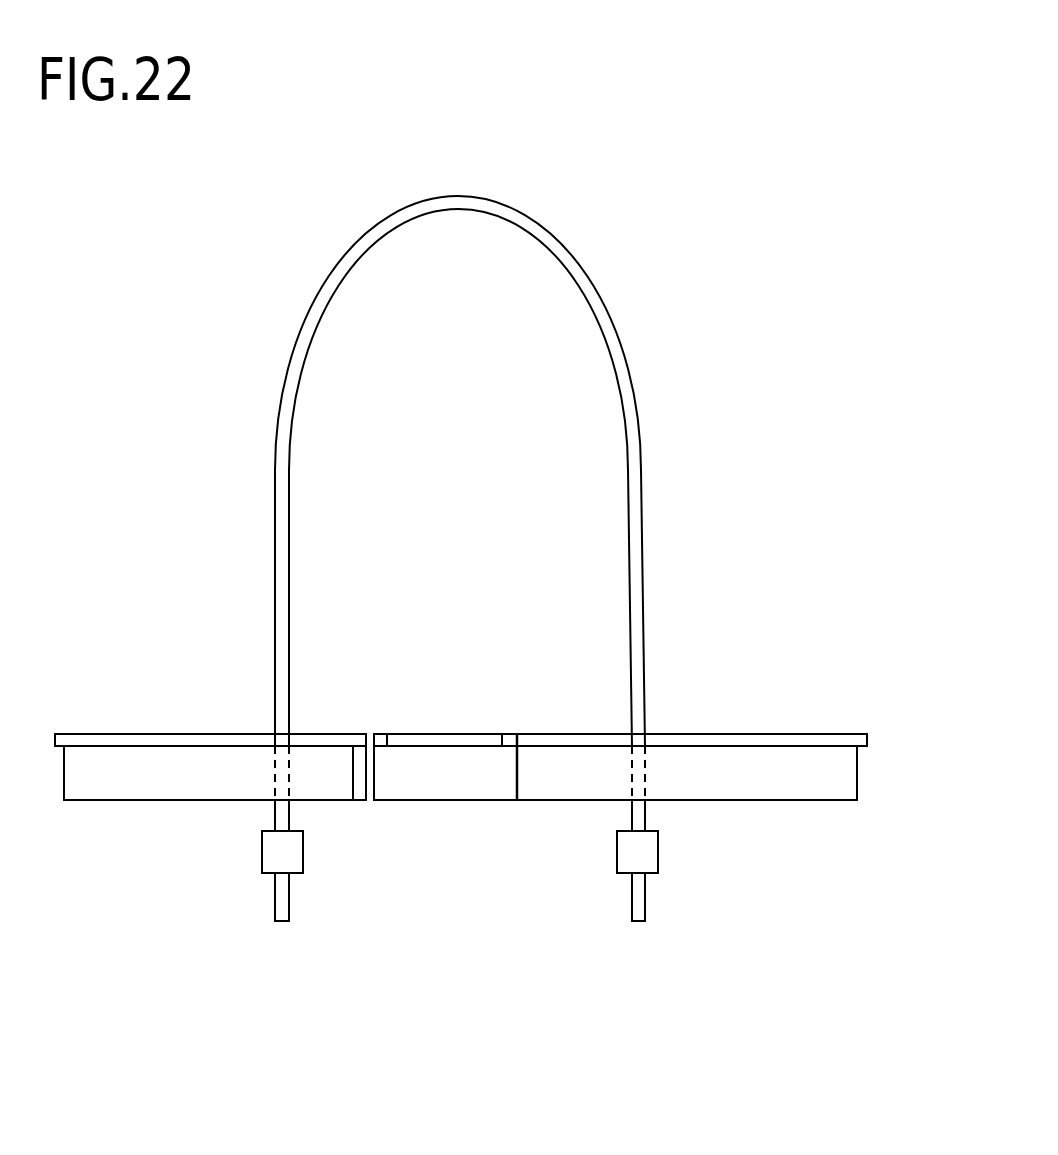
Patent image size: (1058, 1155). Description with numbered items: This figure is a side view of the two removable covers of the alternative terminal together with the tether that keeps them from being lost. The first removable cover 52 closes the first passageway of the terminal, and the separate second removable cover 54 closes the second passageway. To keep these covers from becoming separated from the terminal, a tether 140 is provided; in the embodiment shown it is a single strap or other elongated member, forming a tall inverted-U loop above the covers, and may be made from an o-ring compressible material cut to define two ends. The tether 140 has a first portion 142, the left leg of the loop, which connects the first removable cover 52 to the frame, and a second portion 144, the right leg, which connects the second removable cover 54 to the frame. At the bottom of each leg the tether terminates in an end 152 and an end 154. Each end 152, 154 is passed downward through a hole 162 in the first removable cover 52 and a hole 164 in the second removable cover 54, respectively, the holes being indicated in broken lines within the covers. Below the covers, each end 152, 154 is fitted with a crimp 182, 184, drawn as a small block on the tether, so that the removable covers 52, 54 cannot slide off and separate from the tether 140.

The tether 140 is at (644, 578).
The first portion 142 is at (275, 508).
The second portion 144 is at (644, 466).
The first removable cover 52 is at (125, 734).
The second removable cover 54 is at (797, 734).
The hole 162 is at (277, 768).
The hole 164 is at (645, 765).
The crimp 182 is at (303, 860).
The crimp 184 is at (658, 862).
The end 152 is at (289, 910).
The end 154 is at (645, 906).